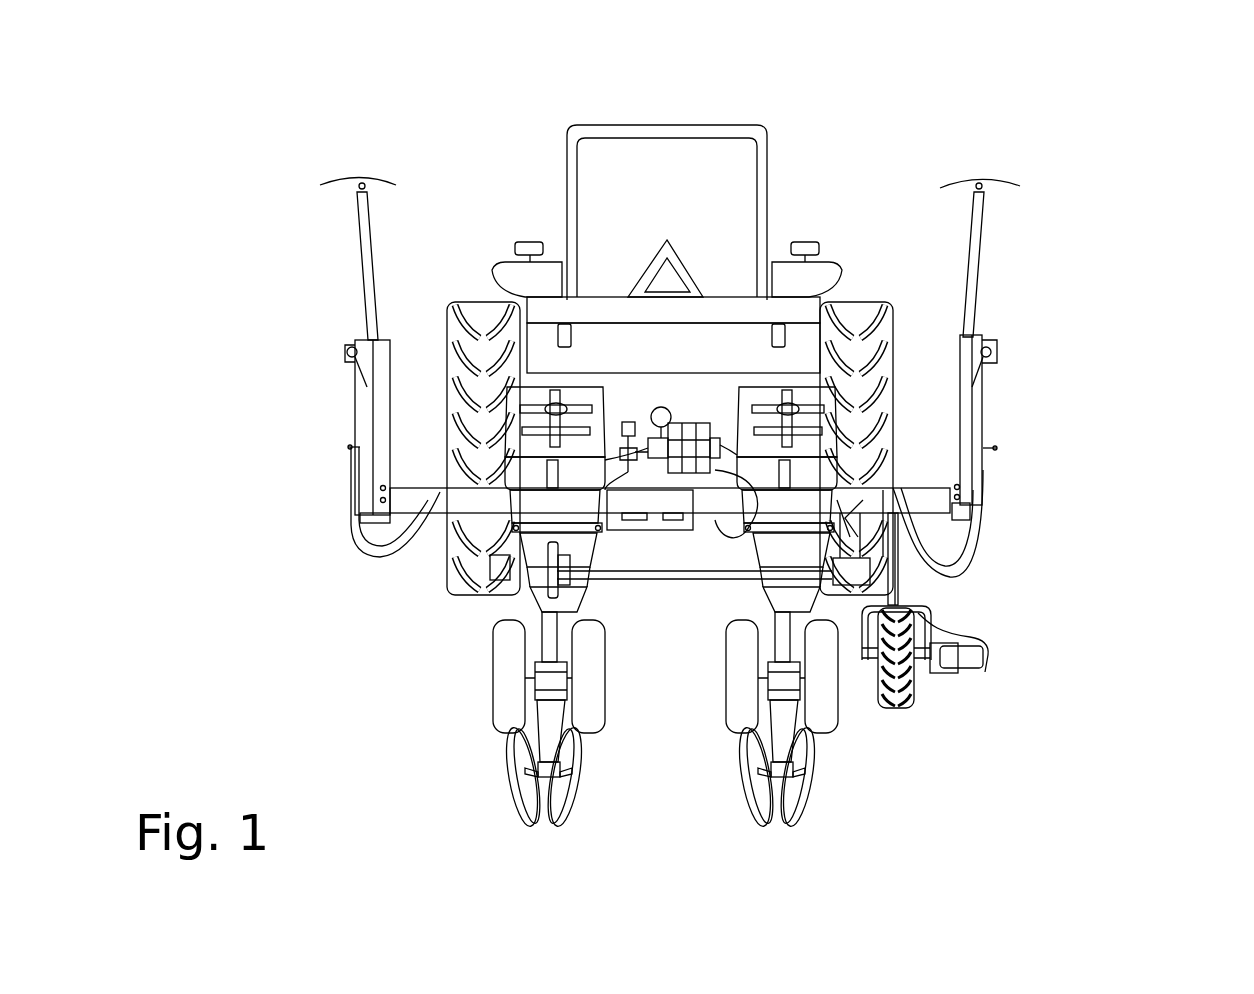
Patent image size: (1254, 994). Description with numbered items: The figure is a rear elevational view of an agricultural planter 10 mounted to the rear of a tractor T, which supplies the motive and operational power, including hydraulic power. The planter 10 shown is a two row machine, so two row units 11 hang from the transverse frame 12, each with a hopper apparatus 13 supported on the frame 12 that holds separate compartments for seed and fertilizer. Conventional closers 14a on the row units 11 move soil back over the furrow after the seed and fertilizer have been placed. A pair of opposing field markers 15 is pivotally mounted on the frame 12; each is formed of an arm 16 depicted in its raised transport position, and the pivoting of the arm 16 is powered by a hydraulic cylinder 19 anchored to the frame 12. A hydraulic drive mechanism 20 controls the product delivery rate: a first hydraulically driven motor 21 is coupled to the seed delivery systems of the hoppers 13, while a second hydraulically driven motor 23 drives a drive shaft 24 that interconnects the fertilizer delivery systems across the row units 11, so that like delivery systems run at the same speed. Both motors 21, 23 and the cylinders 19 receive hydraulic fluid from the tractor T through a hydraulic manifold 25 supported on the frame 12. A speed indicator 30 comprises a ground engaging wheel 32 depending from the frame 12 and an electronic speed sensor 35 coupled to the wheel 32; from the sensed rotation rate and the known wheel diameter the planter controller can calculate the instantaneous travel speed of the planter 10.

The tractor T is at (628, 125).
The planter 10 is at (1130, 458).
The hydraulic drive mechanism 20 is at (407, 627).
The speed indicator 30 is at (1080, 548).
The row unit 11 is at (496, 748).
The transverse frame 12 is at (440, 507).
The hopper apparatus 13 is at (510, 393).
The closers 14a is at (580, 808).
The field marker 15 is at (358, 214).
The arm 16 is at (380, 348).
The hydraulic cylinder 19 is at (350, 445).
The first hydraulically driven motor 21 is at (483, 593).
The second hydraulically driven motor 23 is at (890, 582).
The drive shaft 24 is at (633, 585).
The hydraulic manifold 25 is at (688, 420).
The ground engaging wheel 32 is at (913, 695).
The electronic speed sensor 35 is at (977, 677).